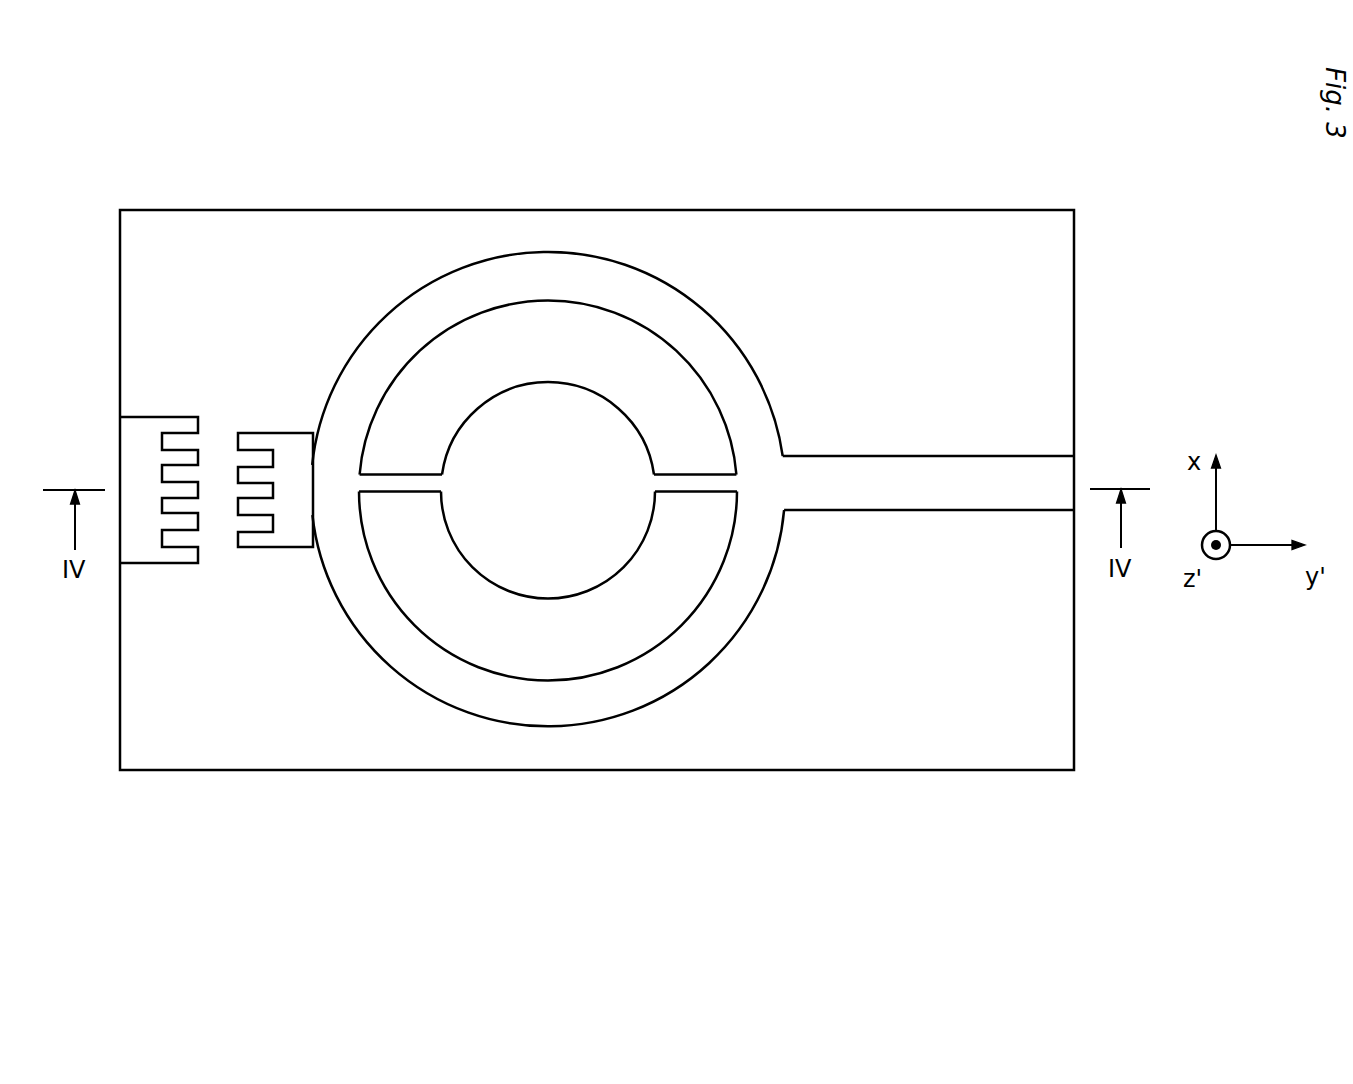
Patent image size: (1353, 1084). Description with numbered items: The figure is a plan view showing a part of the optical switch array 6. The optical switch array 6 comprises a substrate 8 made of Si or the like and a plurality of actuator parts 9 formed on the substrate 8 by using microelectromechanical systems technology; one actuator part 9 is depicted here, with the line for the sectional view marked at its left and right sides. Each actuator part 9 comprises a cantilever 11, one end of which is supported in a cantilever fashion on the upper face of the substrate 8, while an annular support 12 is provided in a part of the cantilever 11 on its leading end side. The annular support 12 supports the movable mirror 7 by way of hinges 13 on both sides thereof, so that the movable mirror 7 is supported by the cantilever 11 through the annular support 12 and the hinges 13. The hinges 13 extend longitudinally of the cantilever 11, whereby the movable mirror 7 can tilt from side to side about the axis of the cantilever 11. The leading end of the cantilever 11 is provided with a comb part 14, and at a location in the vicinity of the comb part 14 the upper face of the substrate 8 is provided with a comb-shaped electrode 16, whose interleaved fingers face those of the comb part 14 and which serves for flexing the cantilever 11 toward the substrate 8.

The optical switch array 6 is at (757, 175).
The movable mirror 7 is at (518, 428).
The substrate 8 is at (887, 745).
The actuator part 9 is at (628, 258).
The cantilever 11 is at (930, 490).
The annular support 12 is at (552, 713).
The hinges 13 is at (407, 480).
The comb part 14 is at (262, 442).
The comb-shaped electrode 16 is at (180, 553).